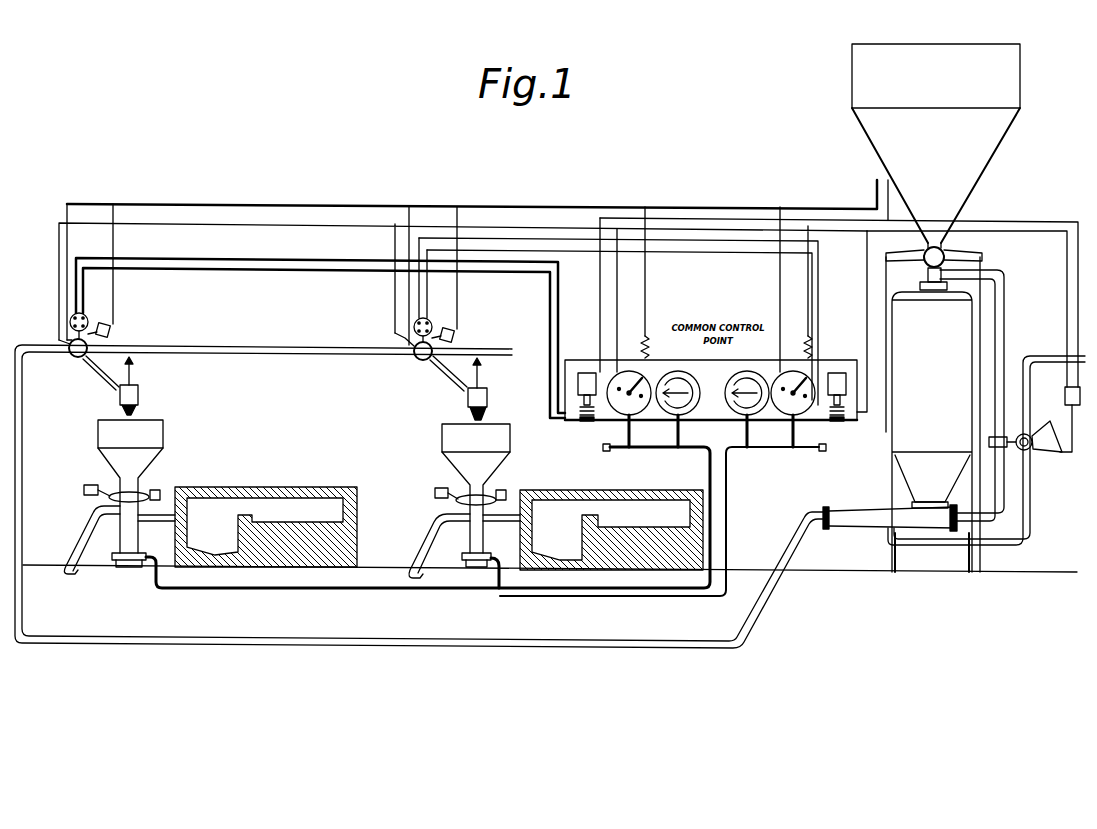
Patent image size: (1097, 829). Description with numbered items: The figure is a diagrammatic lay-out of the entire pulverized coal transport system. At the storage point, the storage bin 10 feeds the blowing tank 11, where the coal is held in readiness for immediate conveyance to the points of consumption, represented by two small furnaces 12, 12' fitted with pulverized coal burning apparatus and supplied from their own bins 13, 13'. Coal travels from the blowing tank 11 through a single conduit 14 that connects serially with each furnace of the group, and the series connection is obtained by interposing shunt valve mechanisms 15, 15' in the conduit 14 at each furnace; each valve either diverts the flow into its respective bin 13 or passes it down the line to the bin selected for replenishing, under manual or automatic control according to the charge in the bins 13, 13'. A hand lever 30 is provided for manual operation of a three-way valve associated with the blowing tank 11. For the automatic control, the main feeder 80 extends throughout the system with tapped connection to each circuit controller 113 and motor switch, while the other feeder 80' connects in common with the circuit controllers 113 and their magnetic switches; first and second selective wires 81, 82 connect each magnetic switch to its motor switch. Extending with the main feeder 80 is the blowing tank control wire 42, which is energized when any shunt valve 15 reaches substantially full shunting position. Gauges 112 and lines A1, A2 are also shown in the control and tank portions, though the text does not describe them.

The storage bin 10 is at (862, 91).
The blowing tank 11 is at (958, 350).
The furnace 12 is at (611, 513).
The furnace 12' is at (266, 510).
The bin 13 is at (461, 468).
The bin 13' is at (111, 465).
The conduit 14 is at (421, 645).
The shunt valve mechanism 15 is at (422, 354).
The shunt valve mechanism 15' is at (77, 351).
The hand lever 30 is at (1030, 436).
The blowing tank control wire 42 is at (312, 227).
The main feeder 80 is at (472, 272).
The feeder 80' is at (744, 274).
The first selective wire 81 is at (558, 298).
The second selective wire 82 is at (550, 316).
The gauge 112 is at (676, 416).
The circuit controller 113 is at (626, 416).
The sensing line A1 is at (1078, 279).
The sensing line A2 is at (1067, 305).